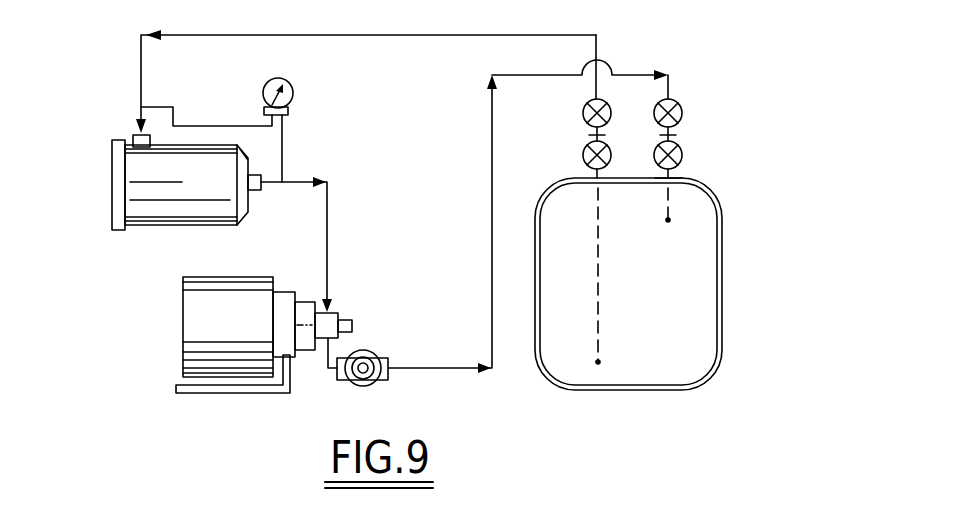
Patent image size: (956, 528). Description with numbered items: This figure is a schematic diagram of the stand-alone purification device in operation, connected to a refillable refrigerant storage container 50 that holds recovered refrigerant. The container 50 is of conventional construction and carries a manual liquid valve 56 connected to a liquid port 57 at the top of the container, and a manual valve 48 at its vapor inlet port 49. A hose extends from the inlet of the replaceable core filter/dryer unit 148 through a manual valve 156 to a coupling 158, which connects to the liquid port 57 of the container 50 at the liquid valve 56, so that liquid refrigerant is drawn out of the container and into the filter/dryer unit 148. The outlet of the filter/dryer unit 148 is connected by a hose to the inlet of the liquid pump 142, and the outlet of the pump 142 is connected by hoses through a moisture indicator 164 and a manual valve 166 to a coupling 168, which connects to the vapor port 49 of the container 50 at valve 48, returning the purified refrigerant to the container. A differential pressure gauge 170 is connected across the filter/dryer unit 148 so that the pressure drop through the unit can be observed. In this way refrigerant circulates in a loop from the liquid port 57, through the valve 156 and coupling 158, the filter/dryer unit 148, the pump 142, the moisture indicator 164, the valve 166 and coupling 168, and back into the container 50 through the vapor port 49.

The differential pressure gauge 170 is at (294, 94).
The replaceable core filter/dryer unit 148 is at (167, 226).
The liquid pump 142 is at (183, 333).
The moisture indicator 164 is at (378, 353).
The manual valve 156 is at (583, 108).
The coupling 158 is at (591, 135).
The manual liquid valve 56 is at (583, 156).
The manual valve 166 is at (681, 109).
The coupling 168 is at (676, 136).
The manual valve 48 is at (683, 156).
The vapor inlet port 49 is at (668, 177).
The liquid port 57 is at (593, 177).
The refillable refrigerant storage container 50 is at (730, 281).